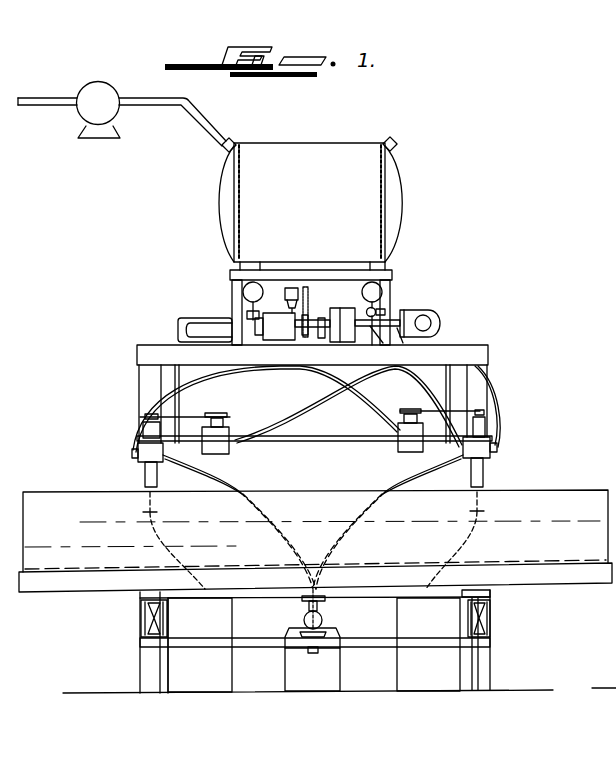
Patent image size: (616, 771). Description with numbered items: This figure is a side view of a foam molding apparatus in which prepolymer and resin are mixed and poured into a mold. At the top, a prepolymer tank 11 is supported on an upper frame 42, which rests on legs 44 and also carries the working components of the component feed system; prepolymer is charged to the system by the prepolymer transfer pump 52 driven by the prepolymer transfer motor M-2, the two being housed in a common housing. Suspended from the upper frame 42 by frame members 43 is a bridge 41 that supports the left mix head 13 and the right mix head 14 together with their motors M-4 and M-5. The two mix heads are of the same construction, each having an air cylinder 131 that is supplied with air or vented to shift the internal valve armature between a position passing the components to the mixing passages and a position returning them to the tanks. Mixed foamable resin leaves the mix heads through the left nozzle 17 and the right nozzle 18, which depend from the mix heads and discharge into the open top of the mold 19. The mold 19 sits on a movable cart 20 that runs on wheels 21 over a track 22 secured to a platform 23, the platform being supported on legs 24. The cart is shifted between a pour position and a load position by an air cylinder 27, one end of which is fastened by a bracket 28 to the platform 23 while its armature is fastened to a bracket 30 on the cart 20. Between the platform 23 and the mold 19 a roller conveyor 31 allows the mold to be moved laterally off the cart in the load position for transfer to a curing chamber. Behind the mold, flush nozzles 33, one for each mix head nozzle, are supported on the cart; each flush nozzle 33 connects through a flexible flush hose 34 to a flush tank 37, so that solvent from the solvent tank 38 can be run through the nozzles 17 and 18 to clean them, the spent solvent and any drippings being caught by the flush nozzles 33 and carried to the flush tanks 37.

The prepolymer tank 11 is at (222, 212).
The left mix head 13 is at (163, 459).
The right mix head 14 is at (493, 456).
The left nozzle 17 is at (145, 474).
The right nozzle 18 is at (485, 477).
The mold 19 is at (323, 514).
The movable cart 20 is at (490, 594).
The wheels 21 is at (142, 632).
The track 22 is at (484, 633).
The platform 23 is at (414, 640).
The legs 24 is at (145, 665).
The air cylinder 27 is at (318, 612).
The bracket 28 is at (324, 624).
The bracket 30 is at (302, 604).
The roller conveyor 31 is at (66, 588).
The flush nozzle 33 is at (140, 505).
The flush hose 34 is at (470, 537).
The flush tank 37 is at (214, 690).
The solvent tank 38 is at (305, 690).
The bridge 41 is at (361, 436).
The upper frame 42 is at (152, 347).
The frame members 43 is at (180, 394).
The legs 44 is at (488, 372).
The prepolymer transfer pump 52 is at (84, 122).
The air cylinder 131 is at (132, 456).
The prepolymer transfer motor M-2 is at (99, 132).
The mix head motor M-4 is at (230, 450).
The mix head motor M-5 is at (398, 447).